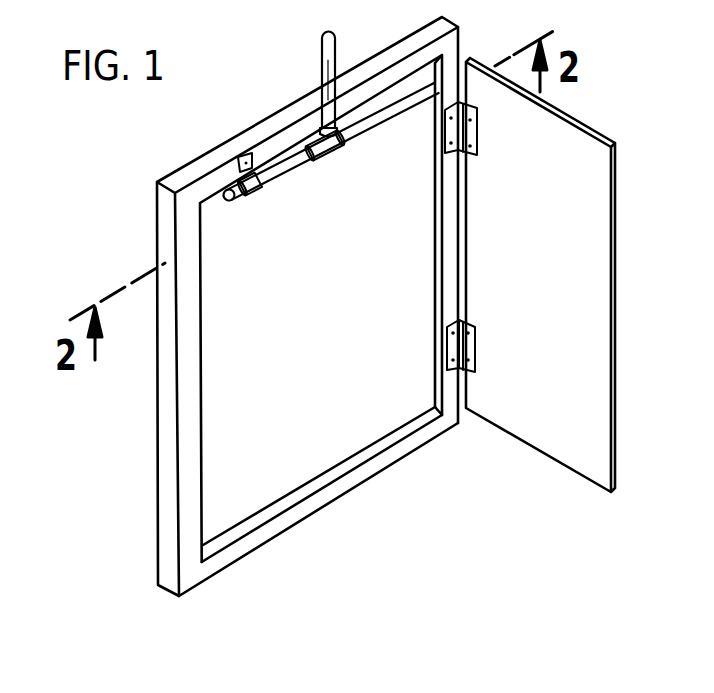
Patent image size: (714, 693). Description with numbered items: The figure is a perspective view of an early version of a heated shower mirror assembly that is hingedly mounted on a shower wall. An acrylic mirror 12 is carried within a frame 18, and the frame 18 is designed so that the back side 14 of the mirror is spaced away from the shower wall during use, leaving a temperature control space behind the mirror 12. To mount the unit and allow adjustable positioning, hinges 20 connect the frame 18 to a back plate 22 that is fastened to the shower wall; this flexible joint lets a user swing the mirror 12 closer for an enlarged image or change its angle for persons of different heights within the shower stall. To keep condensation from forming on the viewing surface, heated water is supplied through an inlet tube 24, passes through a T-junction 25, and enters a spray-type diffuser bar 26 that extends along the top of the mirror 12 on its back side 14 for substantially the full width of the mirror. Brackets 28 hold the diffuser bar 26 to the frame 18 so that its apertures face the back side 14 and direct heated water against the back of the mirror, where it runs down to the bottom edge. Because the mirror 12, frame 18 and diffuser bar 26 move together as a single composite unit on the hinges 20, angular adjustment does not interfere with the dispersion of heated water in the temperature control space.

The acrylic mirror 12 is at (350, 311).
The back side 14 is at (365, 432).
The frame 18 is at (313, 503).
The hinges 20 is at (468, 158).
The back plate 22 is at (541, 310).
The inlet tube 24 is at (322, 56).
The T-junction 25 is at (330, 142).
The diffuser bar 26 is at (277, 163).
The brackets 28 is at (258, 188).